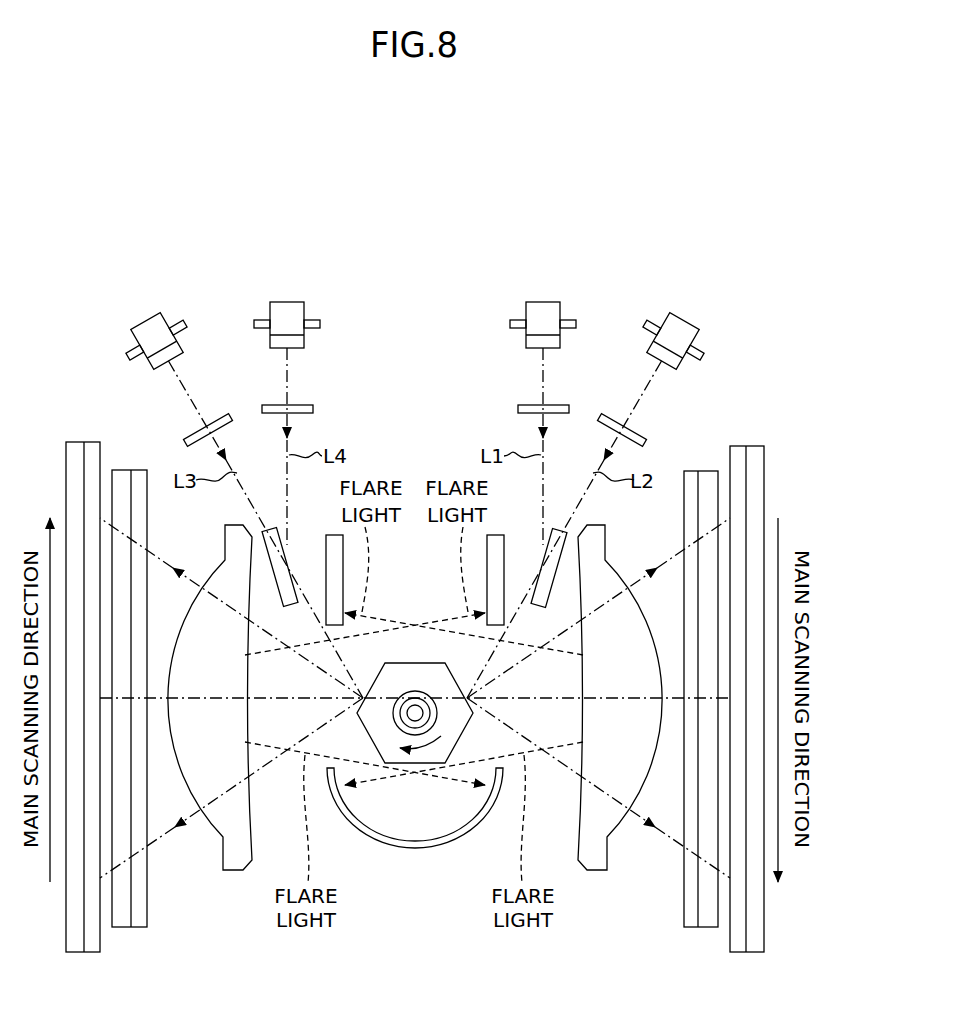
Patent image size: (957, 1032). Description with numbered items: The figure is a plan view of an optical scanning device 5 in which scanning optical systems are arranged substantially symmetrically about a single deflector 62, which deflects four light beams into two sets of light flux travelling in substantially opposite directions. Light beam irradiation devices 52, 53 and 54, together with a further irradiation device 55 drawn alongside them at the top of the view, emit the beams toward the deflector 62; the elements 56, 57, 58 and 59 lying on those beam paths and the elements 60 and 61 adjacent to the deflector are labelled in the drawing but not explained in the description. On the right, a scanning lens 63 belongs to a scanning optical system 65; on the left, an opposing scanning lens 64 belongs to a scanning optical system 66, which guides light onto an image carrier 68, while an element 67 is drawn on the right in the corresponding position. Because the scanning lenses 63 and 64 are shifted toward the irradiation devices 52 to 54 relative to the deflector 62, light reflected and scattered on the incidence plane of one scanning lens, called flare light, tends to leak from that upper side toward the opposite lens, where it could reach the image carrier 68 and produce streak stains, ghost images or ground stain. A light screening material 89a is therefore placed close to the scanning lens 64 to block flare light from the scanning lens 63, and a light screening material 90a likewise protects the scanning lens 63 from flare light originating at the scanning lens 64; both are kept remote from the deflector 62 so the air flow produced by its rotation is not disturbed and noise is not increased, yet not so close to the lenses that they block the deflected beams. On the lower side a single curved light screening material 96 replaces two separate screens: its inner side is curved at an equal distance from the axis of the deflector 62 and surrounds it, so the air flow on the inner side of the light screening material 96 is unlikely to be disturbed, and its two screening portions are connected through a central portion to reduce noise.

The optical scanning device 5 is at (102, 209).
The light beam irradiation device 52 is at (682, 328).
The light beam irradiation device 53 is at (544, 310).
The light beam irradiation device 54 is at (286, 310).
The light source 55 is at (150, 325).
The cylindrical lens 56 is at (635, 434).
The cylindrical lens 57 is at (528, 405).
The cylindrical lens 58 is at (302, 405).
The cylindrical lens 59 is at (195, 434).
The reflecting mirror 60 is at (538, 577).
The reflecting mirror 61 is at (292, 577).
The deflector 62 is at (462, 732).
The scanning lens 63 is at (592, 862).
The scanning lens 64 is at (238, 862).
The scanning optical system 65 is at (705, 928).
The scanning optical system 66 is at (125, 928).
The reflecting mirror 67 is at (752, 953).
The image carrier 68 is at (77, 953).
The light screening material 89a is at (326, 550).
The light screening material 90a is at (504, 550).
The light screening material 96 is at (415, 847).